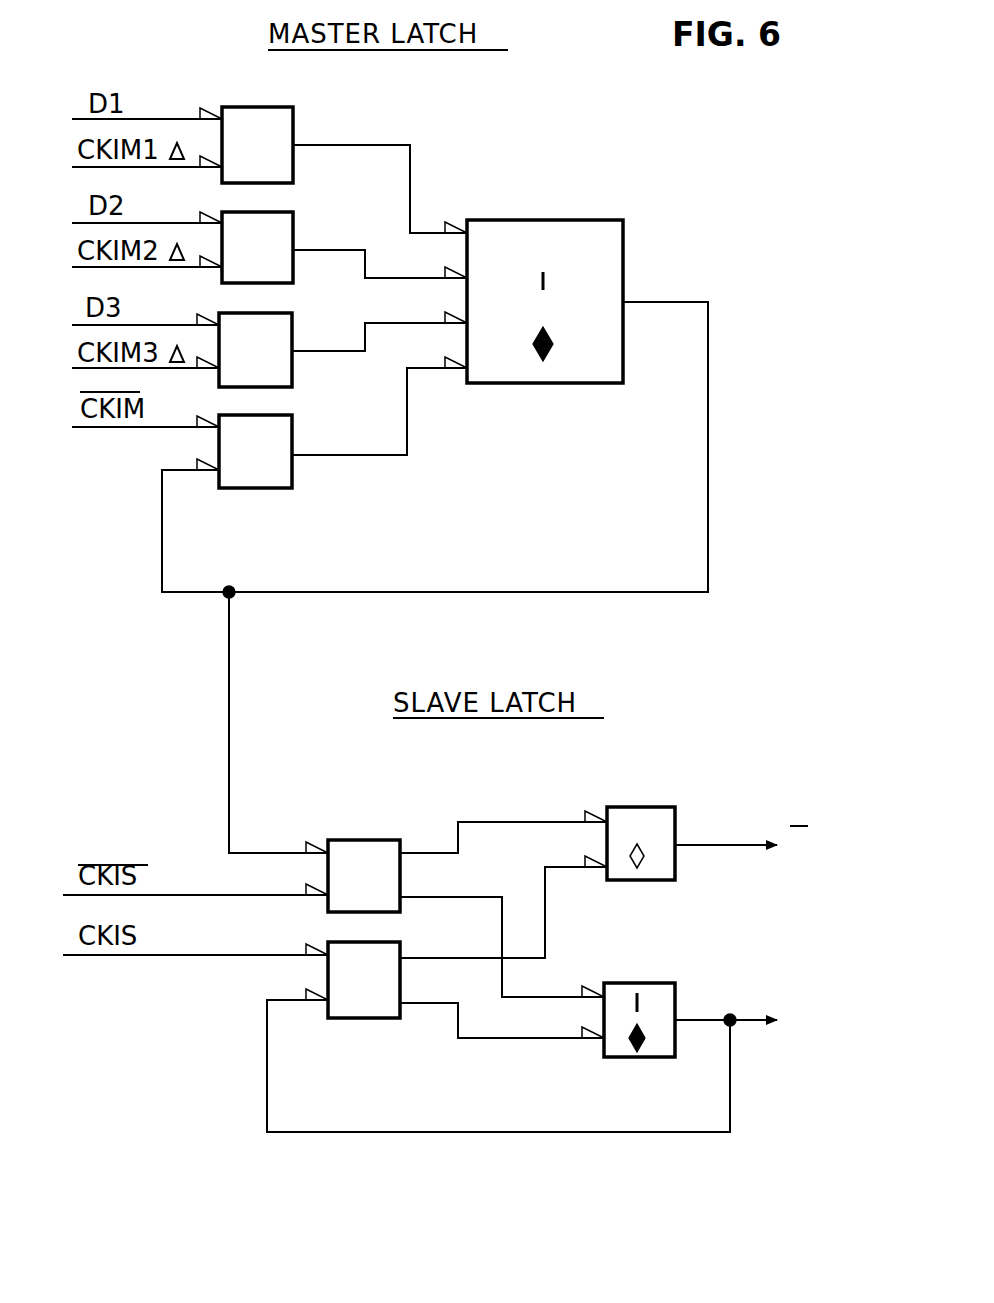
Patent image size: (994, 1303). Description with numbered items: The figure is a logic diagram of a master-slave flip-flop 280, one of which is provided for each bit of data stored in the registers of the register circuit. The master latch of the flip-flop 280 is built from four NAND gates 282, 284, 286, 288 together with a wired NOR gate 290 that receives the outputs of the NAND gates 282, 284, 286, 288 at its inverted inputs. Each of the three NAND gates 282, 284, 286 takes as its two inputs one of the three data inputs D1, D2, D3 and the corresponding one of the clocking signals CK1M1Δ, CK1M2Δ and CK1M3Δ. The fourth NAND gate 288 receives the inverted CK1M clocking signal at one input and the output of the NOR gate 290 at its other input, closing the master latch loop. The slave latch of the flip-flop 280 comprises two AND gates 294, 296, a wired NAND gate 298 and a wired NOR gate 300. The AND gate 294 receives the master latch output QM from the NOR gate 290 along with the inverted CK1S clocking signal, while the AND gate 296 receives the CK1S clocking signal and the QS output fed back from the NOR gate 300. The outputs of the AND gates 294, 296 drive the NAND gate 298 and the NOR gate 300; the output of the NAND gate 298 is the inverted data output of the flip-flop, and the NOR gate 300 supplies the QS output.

The master-slave flip-flop 280 is at (205, 1022).
The NAND gate 282 is at (290, 108).
The NAND gate 284 is at (294, 222).
The NAND gate 286 is at (292, 382).
The NAND gate 288 is at (292, 484).
The wired NOR gate 290 is at (508, 220).
The AND gate 294 is at (378, 840).
The AND gate 296 is at (342, 1018).
The wired NAND gate 298 is at (632, 807).
The wired NOR gate 300 is at (607, 1057).